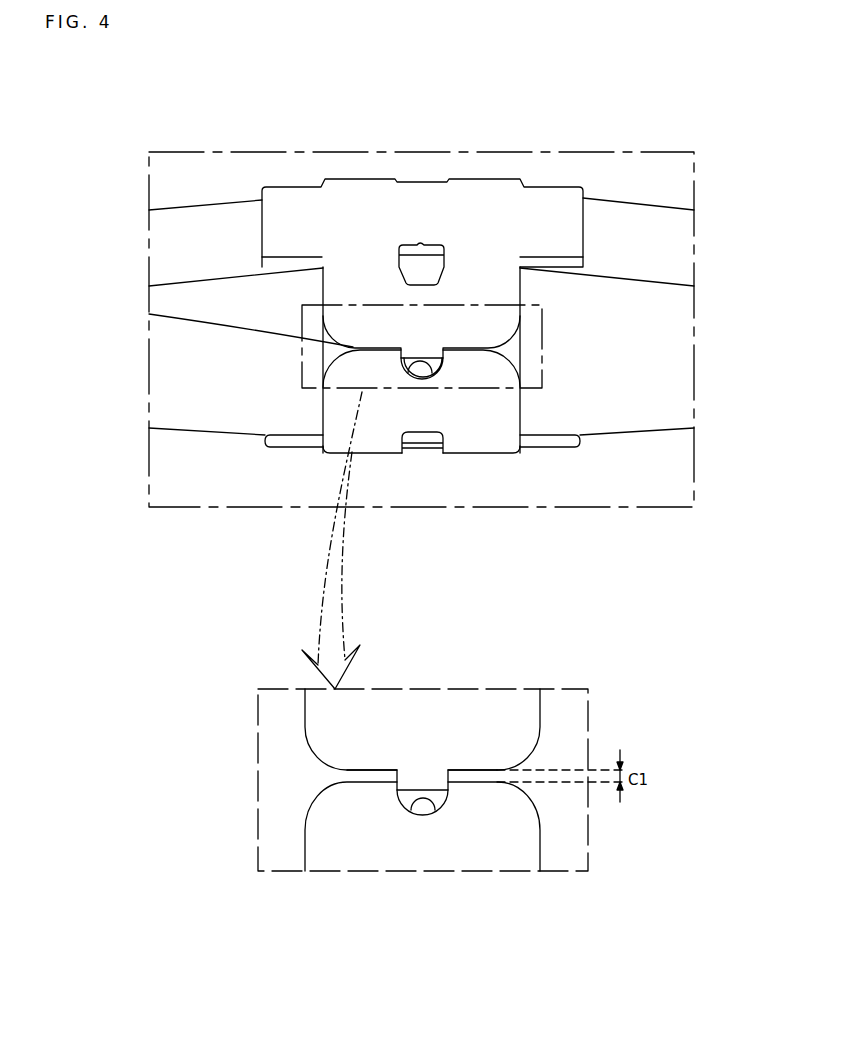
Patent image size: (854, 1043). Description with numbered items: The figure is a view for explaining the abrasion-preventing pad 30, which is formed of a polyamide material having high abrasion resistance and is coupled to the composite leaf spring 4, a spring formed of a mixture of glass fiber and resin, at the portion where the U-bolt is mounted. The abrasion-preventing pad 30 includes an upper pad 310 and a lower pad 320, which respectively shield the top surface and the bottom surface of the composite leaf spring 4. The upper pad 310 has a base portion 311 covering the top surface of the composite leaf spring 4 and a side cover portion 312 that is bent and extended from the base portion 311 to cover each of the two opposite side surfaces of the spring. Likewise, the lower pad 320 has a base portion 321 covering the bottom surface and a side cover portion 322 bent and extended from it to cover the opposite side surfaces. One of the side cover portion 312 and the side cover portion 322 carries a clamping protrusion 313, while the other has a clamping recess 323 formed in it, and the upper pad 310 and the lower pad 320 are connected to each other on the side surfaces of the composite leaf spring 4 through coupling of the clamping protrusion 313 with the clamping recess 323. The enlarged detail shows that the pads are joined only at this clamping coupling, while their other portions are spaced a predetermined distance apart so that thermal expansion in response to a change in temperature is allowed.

The composite leaf spring 4 is at (673, 340).
The abrasion-preventing pad 30 is at (543, 180).
The upper pad 310 is at (355, 178).
The base portion 311 is at (420, 205).
The side cover portion 312 is at (503, 289).
The clamping protrusion 313 is at (418, 352).
The lower pad 320 is at (524, 659).
The base portion 321 is at (297, 449).
The side cover portion 322 is at (498, 417).
The clamping recess 323 is at (432, 374).